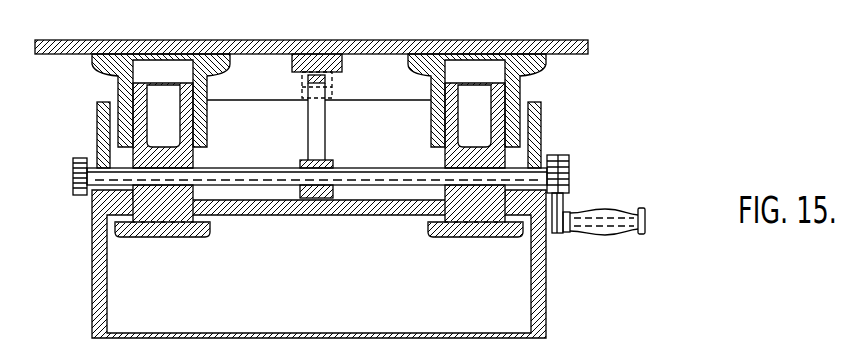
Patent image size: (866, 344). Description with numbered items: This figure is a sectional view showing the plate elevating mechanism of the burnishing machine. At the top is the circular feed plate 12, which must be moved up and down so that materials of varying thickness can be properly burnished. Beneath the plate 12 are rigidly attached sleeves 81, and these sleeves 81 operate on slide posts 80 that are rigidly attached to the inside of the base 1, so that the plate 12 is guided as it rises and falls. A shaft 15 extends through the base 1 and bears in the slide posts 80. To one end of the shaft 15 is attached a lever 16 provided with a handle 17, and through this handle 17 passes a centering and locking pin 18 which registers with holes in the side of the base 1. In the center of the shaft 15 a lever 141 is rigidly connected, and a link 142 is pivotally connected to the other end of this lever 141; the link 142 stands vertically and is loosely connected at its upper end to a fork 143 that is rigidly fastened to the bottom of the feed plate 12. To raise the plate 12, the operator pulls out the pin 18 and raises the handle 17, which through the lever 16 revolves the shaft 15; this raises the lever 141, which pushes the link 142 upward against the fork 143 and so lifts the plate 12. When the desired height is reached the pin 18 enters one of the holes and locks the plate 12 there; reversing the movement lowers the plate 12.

The base 1 is at (92, 282).
The feed plate 12 is at (586, 47).
The shaft 15 is at (73, 178).
The lever 16 is at (565, 154).
The handle 17 is at (614, 210).
The centering and locking pin 18 is at (646, 218).
The slide posts 80 is at (177, 236).
The sleeves 81 is at (118, 86).
The lever 141 is at (334, 162).
The link 142 is at (309, 126).
The fork 143 is at (333, 79).